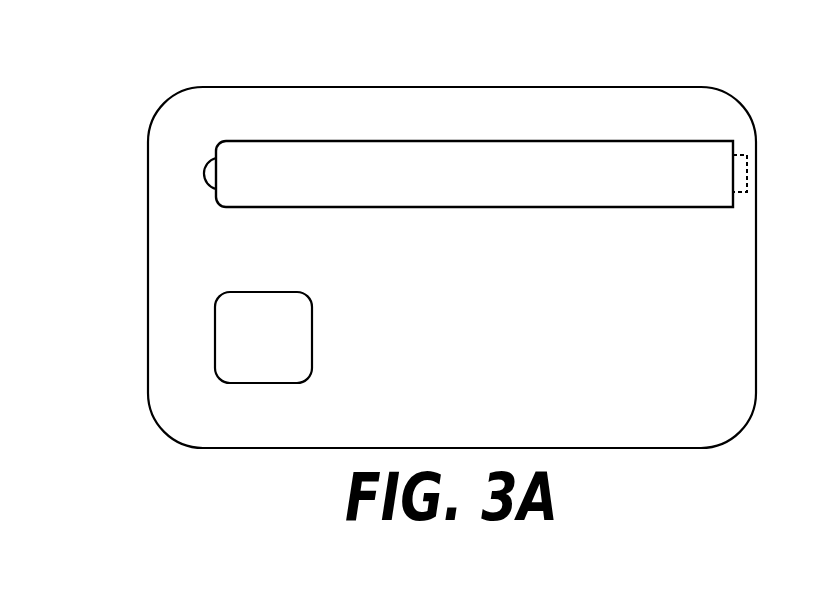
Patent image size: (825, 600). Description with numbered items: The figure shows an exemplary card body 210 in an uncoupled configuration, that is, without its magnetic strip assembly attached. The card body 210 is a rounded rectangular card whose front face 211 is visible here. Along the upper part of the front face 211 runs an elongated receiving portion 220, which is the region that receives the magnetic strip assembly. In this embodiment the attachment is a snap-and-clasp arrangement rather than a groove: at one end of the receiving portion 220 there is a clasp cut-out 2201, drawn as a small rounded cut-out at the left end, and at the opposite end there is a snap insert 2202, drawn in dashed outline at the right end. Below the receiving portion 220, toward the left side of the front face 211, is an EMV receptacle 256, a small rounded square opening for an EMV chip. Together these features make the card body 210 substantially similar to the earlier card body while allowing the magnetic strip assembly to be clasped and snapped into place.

The card body 210 is at (351, 78).
The front face 211 is at (558, 342).
The receiving portion 220 is at (656, 160).
The clasp cut-out 2201 is at (203, 162).
The snap insert 2202 is at (743, 162).
The EMV receptacle 256 is at (287, 301).